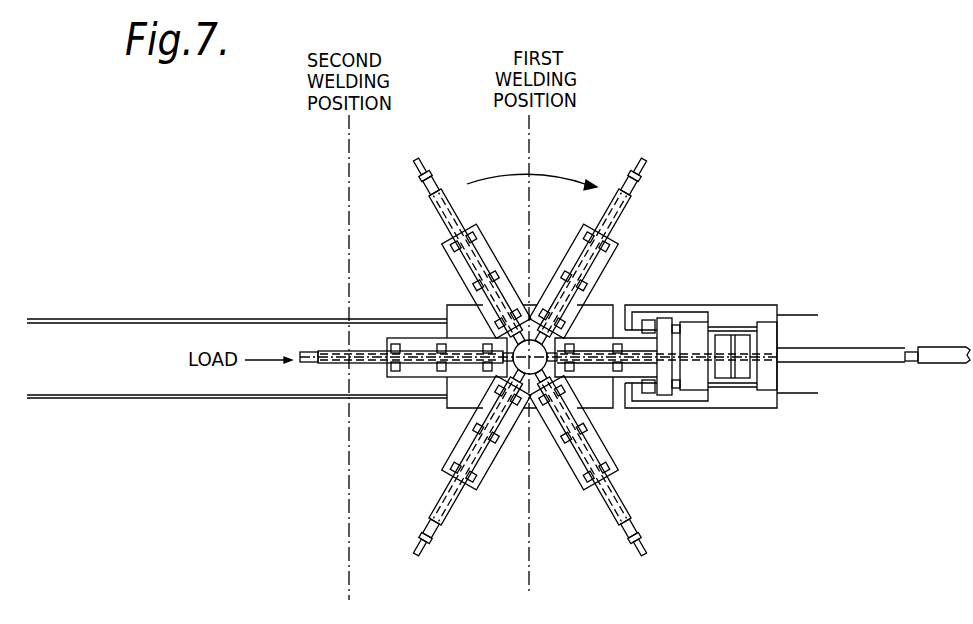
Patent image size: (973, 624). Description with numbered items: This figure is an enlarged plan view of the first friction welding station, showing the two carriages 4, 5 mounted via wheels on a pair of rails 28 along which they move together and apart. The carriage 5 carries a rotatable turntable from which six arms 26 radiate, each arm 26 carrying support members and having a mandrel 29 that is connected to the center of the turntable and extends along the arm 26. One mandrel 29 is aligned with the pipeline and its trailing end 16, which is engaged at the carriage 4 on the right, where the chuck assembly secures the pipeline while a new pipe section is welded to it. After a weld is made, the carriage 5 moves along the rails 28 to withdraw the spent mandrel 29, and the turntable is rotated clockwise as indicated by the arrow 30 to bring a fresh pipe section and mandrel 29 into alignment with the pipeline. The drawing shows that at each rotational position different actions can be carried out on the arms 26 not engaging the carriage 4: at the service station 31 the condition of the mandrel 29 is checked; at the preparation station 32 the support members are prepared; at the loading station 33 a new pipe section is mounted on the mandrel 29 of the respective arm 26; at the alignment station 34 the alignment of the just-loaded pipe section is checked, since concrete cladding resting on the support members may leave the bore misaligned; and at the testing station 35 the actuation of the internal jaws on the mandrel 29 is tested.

The carriage 4 is at (725, 305).
The carriage 5 is at (601, 306).
The trailing end 16 is at (848, 352).
The arm 26 is at (497, 255).
The rail 28 is at (135, 322).
The mandrel 29 is at (305, 363).
The arrow 30 is at (565, 176).
The service station 31 is at (701, 548).
The preparation station 32 is at (506, 554).
The loading station 33 is at (292, 353).
The alignment station 34 is at (479, 156).
The testing station 35 is at (709, 184).